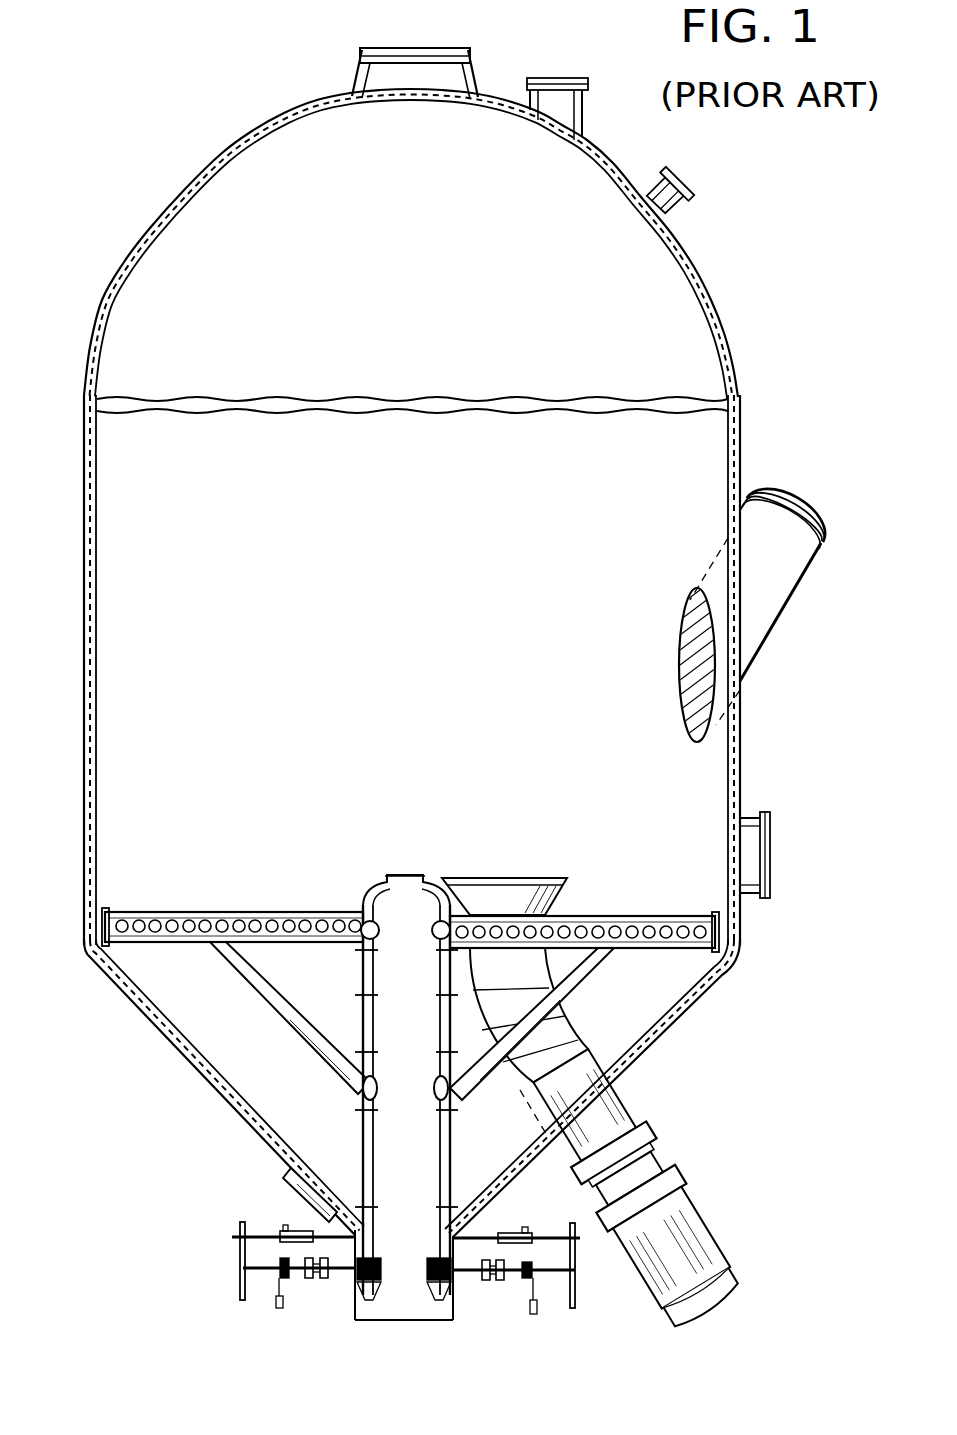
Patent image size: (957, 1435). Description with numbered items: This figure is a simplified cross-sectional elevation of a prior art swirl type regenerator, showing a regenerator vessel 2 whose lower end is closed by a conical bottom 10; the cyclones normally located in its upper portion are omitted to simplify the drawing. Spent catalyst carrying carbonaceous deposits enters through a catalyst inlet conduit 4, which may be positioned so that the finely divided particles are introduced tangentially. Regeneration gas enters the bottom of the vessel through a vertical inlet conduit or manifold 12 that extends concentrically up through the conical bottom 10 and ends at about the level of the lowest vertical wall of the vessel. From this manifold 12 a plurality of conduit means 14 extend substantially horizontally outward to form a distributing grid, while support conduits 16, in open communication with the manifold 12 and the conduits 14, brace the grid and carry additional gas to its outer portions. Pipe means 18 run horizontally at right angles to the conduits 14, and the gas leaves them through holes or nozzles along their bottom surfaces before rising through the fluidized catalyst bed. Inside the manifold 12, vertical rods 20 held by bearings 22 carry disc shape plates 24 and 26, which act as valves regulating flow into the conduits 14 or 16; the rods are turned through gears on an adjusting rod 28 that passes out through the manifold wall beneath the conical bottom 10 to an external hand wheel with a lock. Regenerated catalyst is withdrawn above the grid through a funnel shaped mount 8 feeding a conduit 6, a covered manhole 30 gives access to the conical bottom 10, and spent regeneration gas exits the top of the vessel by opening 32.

The regenerator vessel 2 is at (87, 657).
The catalyst inlet conduit 4 is at (766, 620).
The withdrawal conduit 6 is at (690, 1200).
The funnel shaped mount 8 is at (487, 877).
The conical bottom 10 is at (650, 1045).
The regeneration gas inlet conduit or manifold 12 is at (451, 1140).
The conduit means 14 is at (242, 912).
The support conduits 16 is at (268, 1000).
The pipe means 18 is at (176, 918).
The vertical rods 20 is at (440, 1157).
The bearings 22 is at (436, 950).
The disc shape plate 24 is at (433, 1088).
The disc shape plate 26 is at (432, 930).
The adjusting rod 28 is at (348, 1270).
The covered manhole 30 is at (305, 1191).
The opening 32 is at (425, 63).